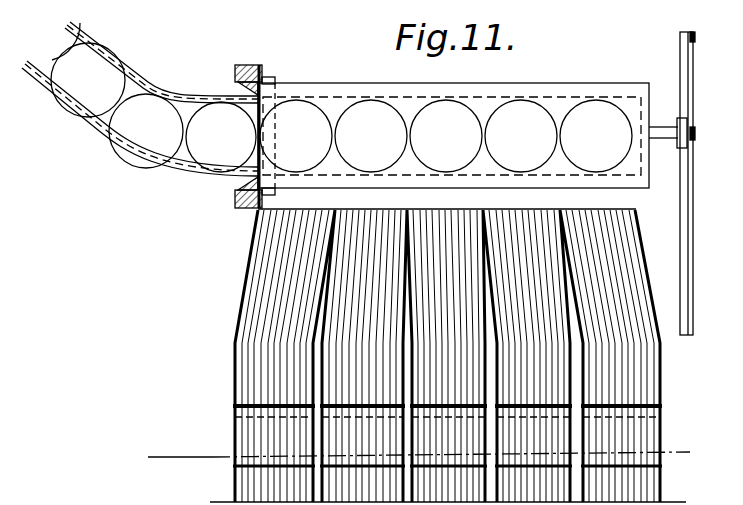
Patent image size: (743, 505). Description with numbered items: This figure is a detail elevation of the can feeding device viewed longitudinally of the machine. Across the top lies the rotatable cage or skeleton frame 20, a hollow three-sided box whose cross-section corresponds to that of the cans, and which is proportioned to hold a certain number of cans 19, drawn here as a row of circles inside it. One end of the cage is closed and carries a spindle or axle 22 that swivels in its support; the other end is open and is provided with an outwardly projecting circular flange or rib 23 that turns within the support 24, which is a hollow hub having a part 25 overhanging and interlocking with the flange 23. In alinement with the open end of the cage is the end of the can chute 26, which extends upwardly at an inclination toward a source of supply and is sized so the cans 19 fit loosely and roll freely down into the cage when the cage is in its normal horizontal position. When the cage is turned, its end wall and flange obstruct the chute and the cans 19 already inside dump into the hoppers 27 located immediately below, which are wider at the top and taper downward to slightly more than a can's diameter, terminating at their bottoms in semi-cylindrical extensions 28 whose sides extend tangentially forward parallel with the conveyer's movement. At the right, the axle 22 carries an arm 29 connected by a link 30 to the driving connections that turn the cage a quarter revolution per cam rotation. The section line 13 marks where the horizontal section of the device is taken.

The section line 13— 13 is at (435, 447).
The containers / cans 19 is at (503, 148).
The rotatable cage or skeleton frame 20 is at (346, 89).
The spindle or axle 22 is at (660, 135).
The outwardly projecting flange or rib 23 is at (247, 86).
The support 24 is at (235, 72).
The overhanging part 25 is at (275, 79).
The can chute 26 is at (86, 37).
The hoppers 27 is at (448, 355).
The semi-cylindrical extensions 28 is at (237, 428).
The arm 29 is at (681, 73).
The link 30 is at (693, 105).